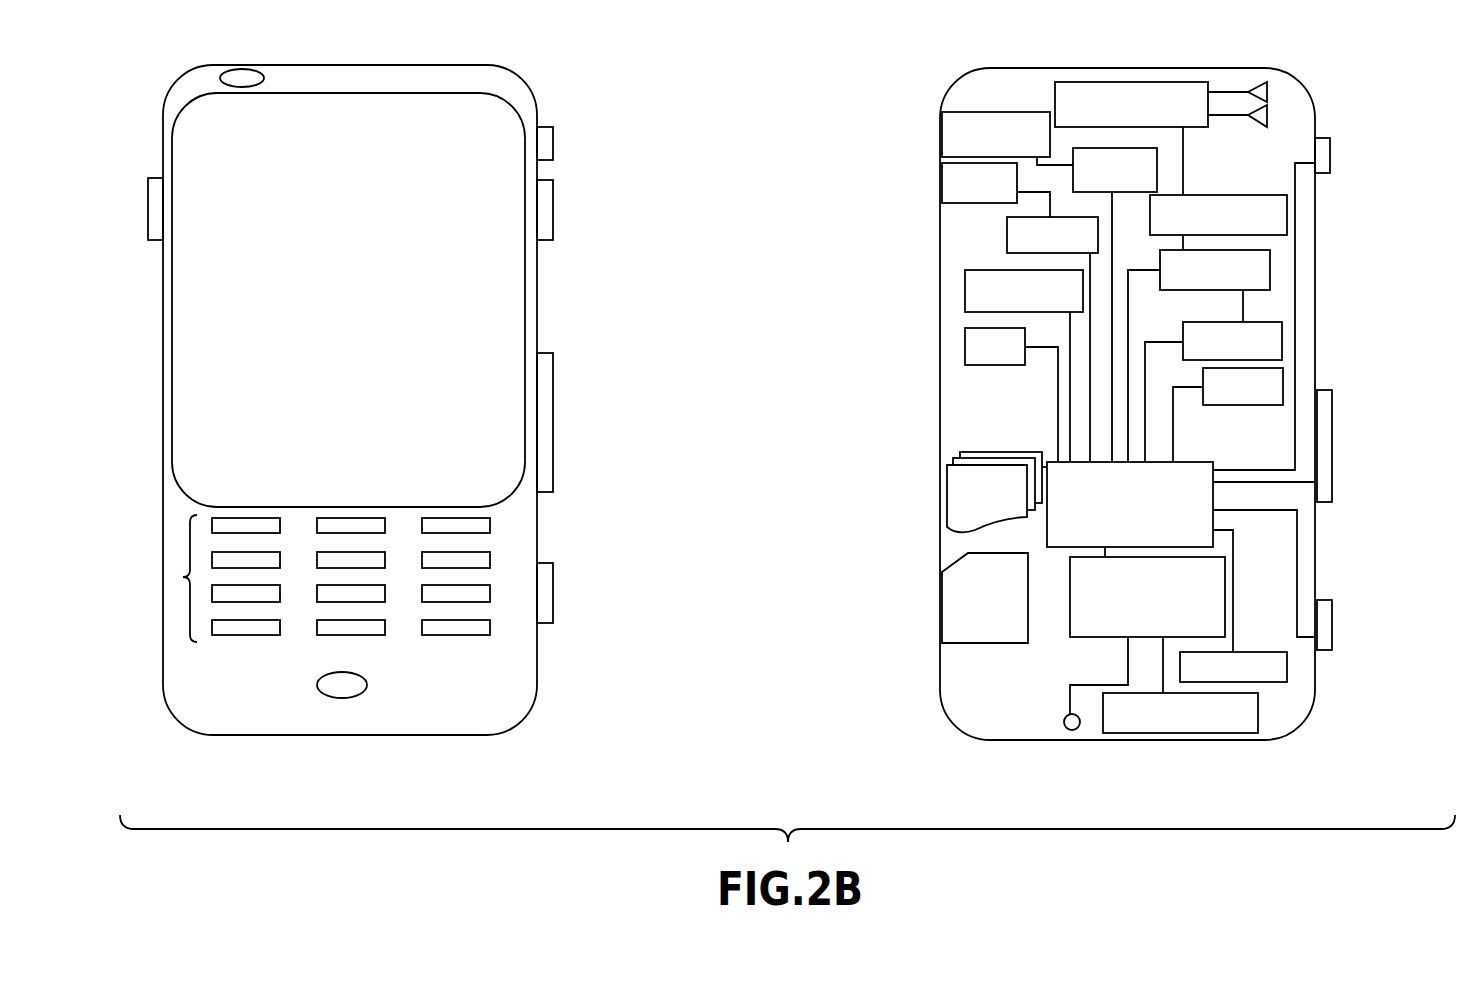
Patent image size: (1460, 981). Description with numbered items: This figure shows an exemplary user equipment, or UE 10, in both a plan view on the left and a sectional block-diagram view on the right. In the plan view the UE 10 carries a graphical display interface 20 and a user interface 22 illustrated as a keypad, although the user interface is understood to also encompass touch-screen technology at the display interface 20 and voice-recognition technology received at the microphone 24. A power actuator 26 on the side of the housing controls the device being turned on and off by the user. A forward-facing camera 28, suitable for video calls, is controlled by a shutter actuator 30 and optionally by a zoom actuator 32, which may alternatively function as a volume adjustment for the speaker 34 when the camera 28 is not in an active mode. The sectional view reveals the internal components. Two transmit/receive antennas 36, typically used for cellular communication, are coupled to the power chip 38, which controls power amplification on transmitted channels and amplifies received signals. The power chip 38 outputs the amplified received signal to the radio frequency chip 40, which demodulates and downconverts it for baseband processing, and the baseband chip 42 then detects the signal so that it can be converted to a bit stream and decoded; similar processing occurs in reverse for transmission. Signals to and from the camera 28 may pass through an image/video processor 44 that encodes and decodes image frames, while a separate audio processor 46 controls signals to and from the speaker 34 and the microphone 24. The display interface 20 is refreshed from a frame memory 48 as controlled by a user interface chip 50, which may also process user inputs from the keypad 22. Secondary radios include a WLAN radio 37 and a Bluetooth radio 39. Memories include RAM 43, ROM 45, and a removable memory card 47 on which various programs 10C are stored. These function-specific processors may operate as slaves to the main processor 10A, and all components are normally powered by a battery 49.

The user equipment 10 is at (530, 778).
The main processor 10A is at (1058, 463).
The programs 10C is at (952, 505).
The graphical display interface 20 is at (197, 315).
The user interface 22 is at (186, 577).
The microphone 24 is at (347, 690).
The power actuator 26 is at (545, 140).
The camera 28 is at (245, 72).
The shutter actuator 30 is at (545, 587).
The side key 32 is at (545, 402).
The speaker 34 is at (152, 180).
The transmit/receive antennas 36 is at (1267, 82).
The wireless local area network radio 37 is at (970, 303).
The power chip 38 is at (1122, 90).
The Bluetooth radio 39 is at (970, 350).
The radio frequency chip 40 is at (1275, 225).
The baseband chip 42 is at (1265, 277).
The random access memory 43 is at (1277, 343).
The image/video processor 44 is at (1152, 182).
The read only memory 45 is at (1277, 388).
The audio processor 46 is at (1007, 238).
The memory card 47 is at (950, 578).
The frame memory 48 is at (1180, 733).
The battery 49 is at (1283, 677).
The user interface chip 50 is at (1098, 625).